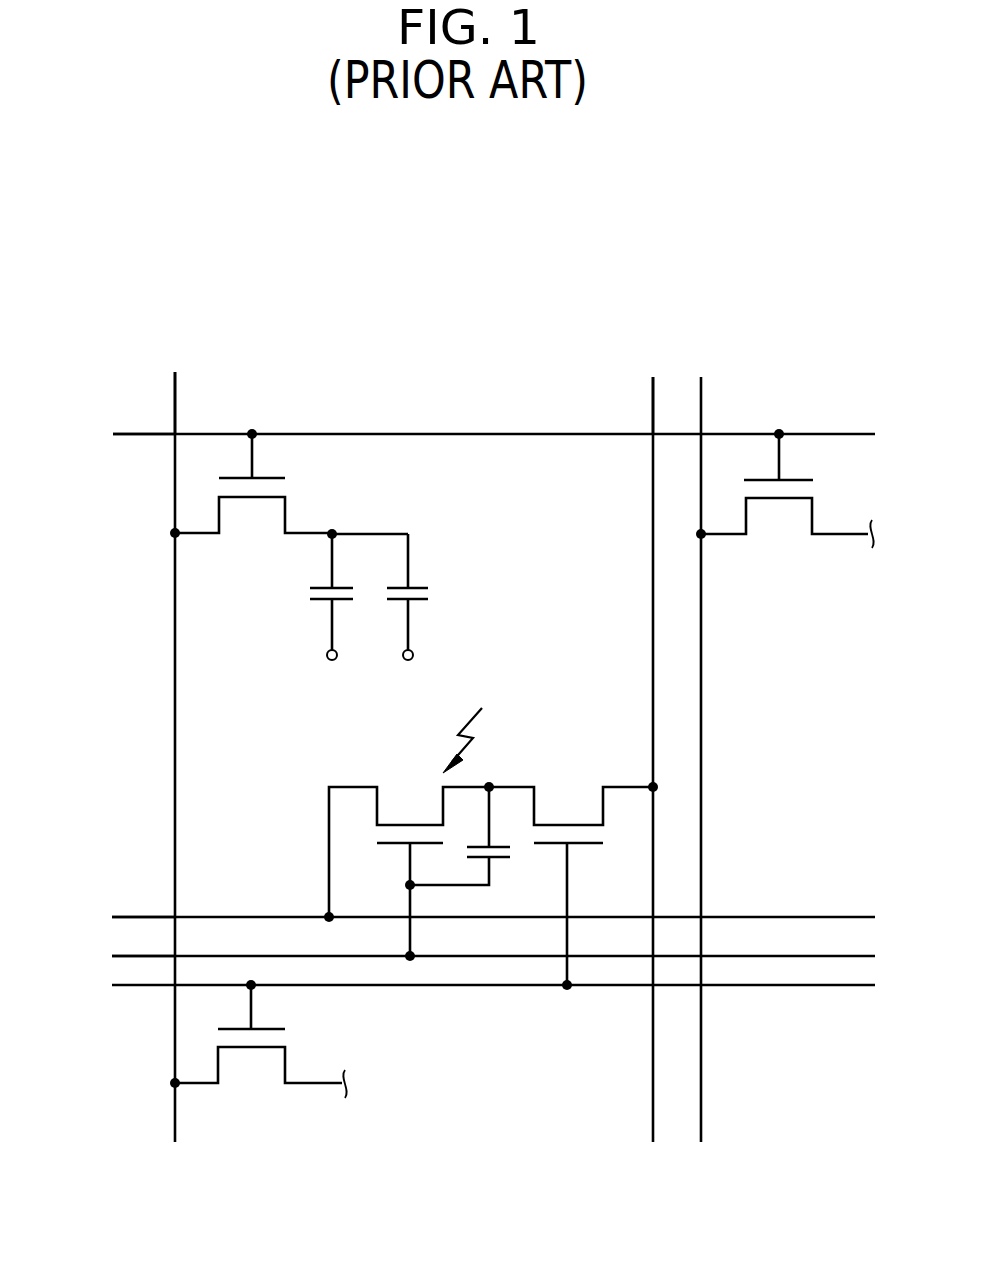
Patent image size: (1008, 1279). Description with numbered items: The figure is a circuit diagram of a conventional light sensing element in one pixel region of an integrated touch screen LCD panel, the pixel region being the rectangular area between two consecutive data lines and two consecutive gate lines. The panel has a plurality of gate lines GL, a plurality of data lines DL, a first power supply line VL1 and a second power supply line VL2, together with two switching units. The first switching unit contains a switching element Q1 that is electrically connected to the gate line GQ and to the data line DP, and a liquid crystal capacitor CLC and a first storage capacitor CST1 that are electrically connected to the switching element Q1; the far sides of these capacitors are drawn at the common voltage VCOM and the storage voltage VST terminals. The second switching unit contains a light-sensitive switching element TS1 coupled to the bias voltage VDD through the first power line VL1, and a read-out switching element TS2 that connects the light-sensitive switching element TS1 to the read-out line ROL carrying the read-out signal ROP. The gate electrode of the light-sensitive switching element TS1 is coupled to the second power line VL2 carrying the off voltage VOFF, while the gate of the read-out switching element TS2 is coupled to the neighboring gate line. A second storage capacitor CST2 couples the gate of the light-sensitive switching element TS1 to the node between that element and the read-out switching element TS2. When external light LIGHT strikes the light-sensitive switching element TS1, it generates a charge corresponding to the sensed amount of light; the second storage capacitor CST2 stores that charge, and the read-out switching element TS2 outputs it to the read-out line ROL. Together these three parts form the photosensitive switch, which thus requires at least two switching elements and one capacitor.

The data line DP is at (175, 392).
The data lines DL is at (175, 399).
The gate line GQ is at (121, 436).
The gate lines GL is at (127, 438).
The switching element Q1 is at (251, 488).
The liquid crystal capacitor CLC is at (306, 589).
The first storage capacitor CST1 is at (411, 592).
The common voltage VCOM is at (328, 672).
The storage voltage VST is at (405, 672).
The external light LIGHT is at (491, 725).
The light-sensitive switching element TS1 is at (406, 861).
The read-out switching element TS2 is at (573, 876).
The second storage capacitor CST2 is at (481, 841).
The first power supply line VL1 is at (131, 913).
The bias voltage VDD is at (115, 916).
The off voltage VOFF is at (109, 954).
The second power supply line VL2 is at (136, 959).
The read-out line ROL is at (653, 399).
The read-out signal ROP is at (633, 391).